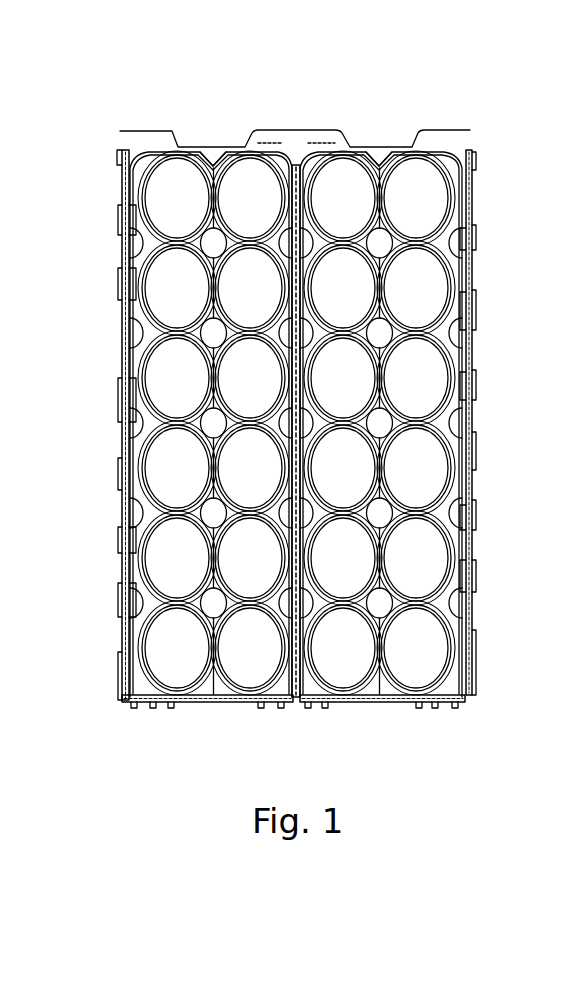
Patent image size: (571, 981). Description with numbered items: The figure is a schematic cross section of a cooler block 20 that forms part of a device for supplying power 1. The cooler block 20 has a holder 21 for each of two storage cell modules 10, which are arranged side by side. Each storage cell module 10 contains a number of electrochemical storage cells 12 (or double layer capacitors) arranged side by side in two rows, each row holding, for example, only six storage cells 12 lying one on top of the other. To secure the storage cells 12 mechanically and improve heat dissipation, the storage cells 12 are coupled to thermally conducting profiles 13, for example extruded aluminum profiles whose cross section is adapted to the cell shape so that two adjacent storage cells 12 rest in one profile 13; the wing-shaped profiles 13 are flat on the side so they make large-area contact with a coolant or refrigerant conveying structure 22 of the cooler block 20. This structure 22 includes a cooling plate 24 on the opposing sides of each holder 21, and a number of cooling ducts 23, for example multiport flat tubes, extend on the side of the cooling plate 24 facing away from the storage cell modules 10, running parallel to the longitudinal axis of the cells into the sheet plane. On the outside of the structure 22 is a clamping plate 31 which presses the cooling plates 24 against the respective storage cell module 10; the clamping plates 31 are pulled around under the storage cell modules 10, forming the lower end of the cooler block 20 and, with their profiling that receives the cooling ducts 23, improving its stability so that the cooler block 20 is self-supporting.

The device for supplying power 1 is at (476, 440).
The storage cell module 10 is at (186, 110).
The storage cell 12 is at (240, 218).
The profile 13 is at (128, 343).
The cooler block 20 is at (482, 208).
The holder 21 is at (213, 158).
The structure conveying coolant 22 is at (295, 163).
The cooling duct 23 is at (128, 415).
The cooling plate 24 is at (128, 306).
The clamping plate 31 is at (125, 268).